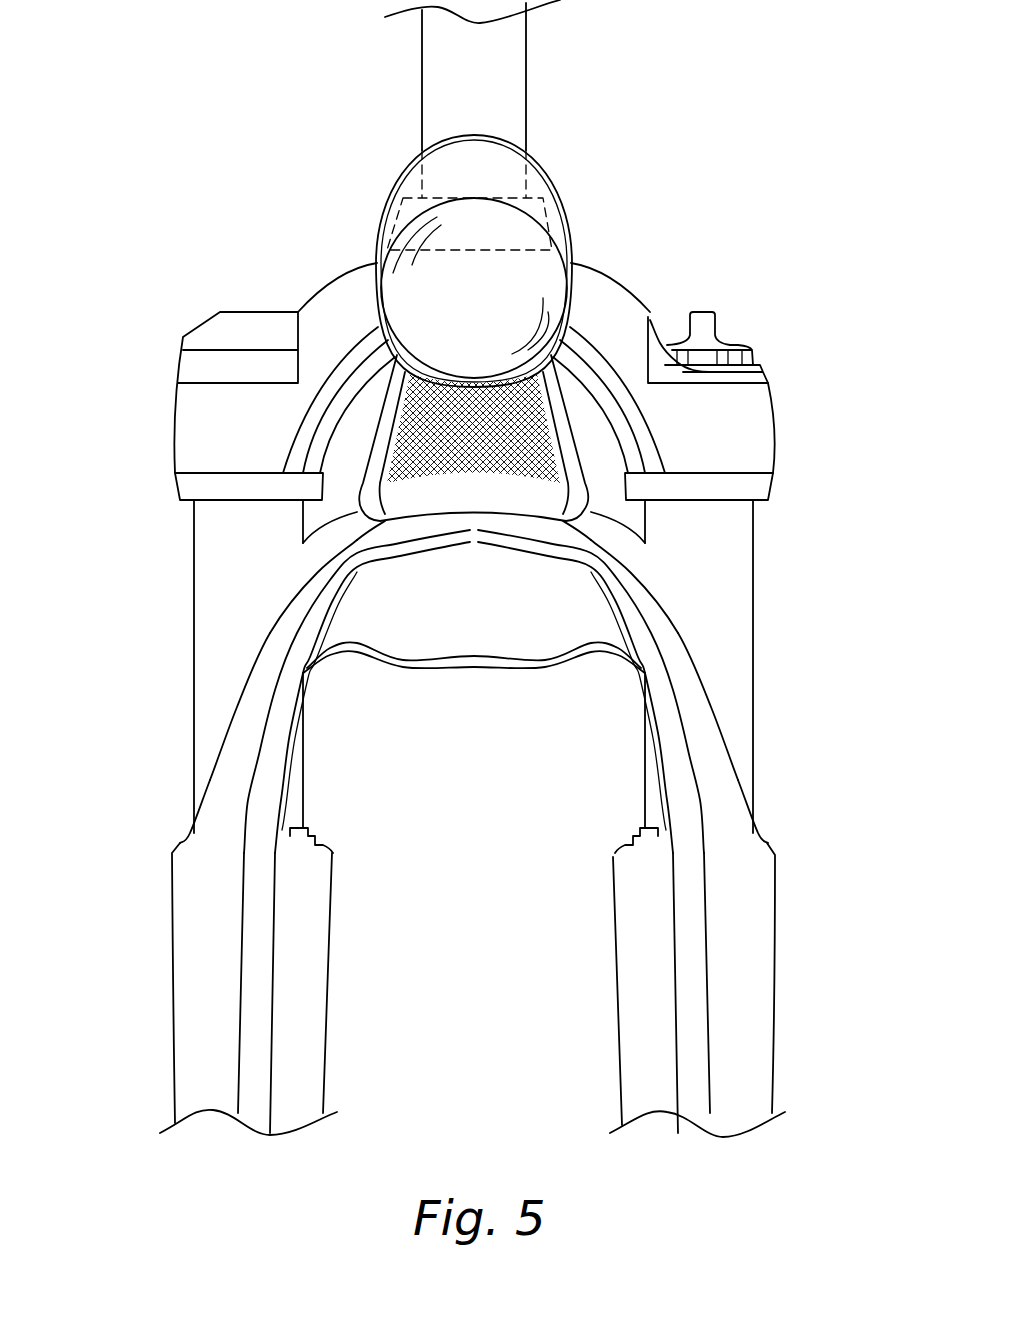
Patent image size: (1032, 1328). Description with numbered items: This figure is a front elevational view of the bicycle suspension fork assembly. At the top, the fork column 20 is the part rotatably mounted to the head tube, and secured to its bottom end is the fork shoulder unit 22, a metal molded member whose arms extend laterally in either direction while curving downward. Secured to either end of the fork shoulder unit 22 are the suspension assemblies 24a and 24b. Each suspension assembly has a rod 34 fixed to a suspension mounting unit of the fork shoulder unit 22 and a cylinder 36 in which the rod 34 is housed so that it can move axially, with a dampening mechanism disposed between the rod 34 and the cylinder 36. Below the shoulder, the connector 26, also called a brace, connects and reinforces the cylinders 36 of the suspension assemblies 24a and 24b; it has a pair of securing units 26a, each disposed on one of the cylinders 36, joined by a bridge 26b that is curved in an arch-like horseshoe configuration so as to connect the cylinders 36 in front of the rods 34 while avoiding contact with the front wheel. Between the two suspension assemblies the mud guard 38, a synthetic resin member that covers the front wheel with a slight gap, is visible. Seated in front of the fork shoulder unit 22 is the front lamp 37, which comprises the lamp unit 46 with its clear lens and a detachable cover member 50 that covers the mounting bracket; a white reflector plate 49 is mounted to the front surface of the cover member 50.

The fork column 20 is at (516, 80).
The fork shoulder unit 22 is at (624, 305).
The suspension assembly 24a is at (734, 637).
The suspension assembly 24b is at (216, 578).
The connector 26 is at (668, 600).
The securing unit 26a is at (213, 848).
The bridge 26b is at (300, 580).
The rod 34 is at (202, 681).
The cylinder 36 is at (192, 970).
The front lamp 37 is at (560, 224).
The mud guard 38 is at (480, 637).
The lamp unit 46 is at (533, 188).
The white reflector plate 49 is at (540, 427).
The cover member 50 is at (388, 415).